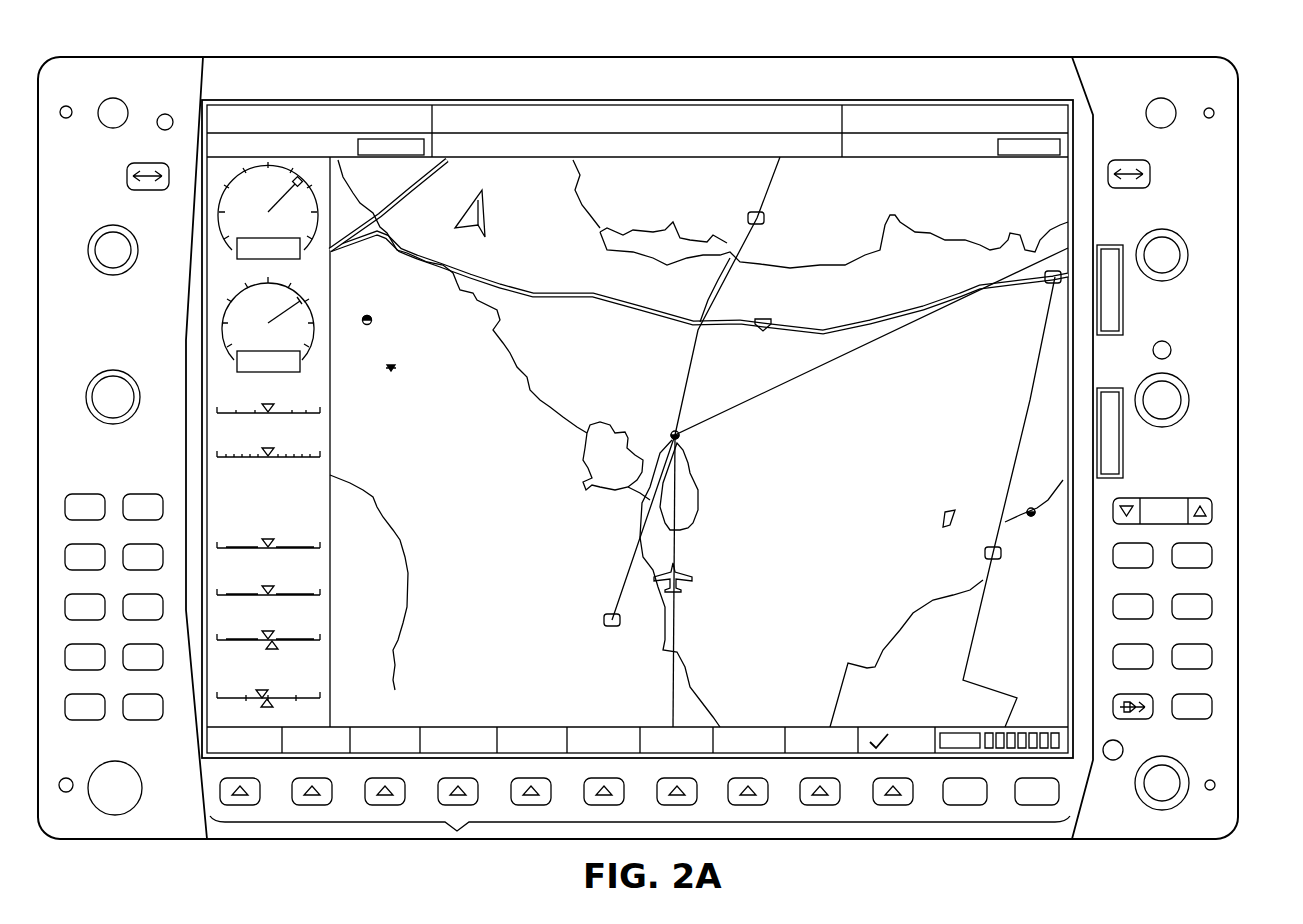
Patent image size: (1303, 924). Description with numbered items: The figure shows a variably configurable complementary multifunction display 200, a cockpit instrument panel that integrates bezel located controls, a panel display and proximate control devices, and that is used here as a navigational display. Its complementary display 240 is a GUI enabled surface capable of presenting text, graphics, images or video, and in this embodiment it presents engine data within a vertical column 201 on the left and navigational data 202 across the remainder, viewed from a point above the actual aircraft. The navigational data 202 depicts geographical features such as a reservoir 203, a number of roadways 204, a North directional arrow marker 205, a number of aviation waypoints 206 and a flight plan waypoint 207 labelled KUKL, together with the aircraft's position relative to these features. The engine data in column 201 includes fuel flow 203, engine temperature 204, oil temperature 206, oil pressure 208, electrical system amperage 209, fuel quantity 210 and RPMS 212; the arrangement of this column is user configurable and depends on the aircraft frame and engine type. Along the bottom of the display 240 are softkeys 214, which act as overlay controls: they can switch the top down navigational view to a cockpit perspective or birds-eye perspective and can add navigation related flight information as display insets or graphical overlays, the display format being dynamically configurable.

The multifunction display 200 is at (1243, 103).
The engine data vertical column 201 is at (207, 462).
The navigational data 202 is at (843, 483).
The reservoir / fuel flow 203 is at (320, 410).
The roadways / engine temperature 204 is at (320, 455).
The North directional arrow marker 205 is at (487, 213).
The aviation waypoints / oil temperature 206 is at (320, 547).
The flight plan waypoint 207 is at (680, 440).
The oil pressure 208 is at (320, 594).
The electrical system amperage 209 is at (320, 638).
The fuel quantity 210 is at (320, 696).
The RPMS 212 is at (302, 288).
The softkeys 214 is at (457, 831).
The complementary display 240 is at (793, 187).